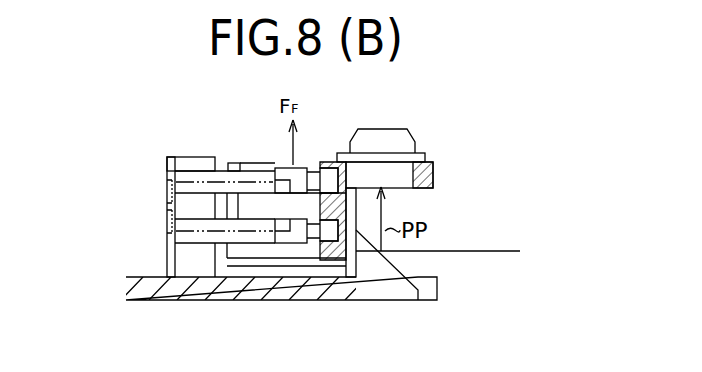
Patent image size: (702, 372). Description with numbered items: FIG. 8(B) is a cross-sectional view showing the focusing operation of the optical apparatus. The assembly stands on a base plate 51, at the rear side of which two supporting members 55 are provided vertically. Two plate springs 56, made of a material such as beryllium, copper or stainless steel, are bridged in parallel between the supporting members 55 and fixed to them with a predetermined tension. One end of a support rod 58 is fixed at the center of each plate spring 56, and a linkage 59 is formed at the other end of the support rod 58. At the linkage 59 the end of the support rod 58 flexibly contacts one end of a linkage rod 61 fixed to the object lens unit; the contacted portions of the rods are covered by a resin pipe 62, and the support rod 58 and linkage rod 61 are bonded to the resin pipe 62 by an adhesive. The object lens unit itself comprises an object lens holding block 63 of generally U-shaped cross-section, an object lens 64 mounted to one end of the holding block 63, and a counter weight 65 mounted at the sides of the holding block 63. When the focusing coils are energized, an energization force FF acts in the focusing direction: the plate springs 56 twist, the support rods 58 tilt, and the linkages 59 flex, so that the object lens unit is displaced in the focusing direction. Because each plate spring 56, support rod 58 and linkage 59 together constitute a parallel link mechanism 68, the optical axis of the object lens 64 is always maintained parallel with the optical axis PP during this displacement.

The base plate 51 is at (277, 300).
The supporting member 55 is at (193, 157).
The plate spring 56 is at (168, 219).
The support rod 58 is at (202, 193).
The linkage 59 is at (290, 167).
The linkage rod 61 is at (336, 162).
The resin pipe 62 is at (312, 166).
The object lens holding block 63 is at (433, 175).
The object lens 64 is at (415, 142).
The counter weight 65 is at (233, 163).
The parallel link mechanism 68 is at (193, 220).